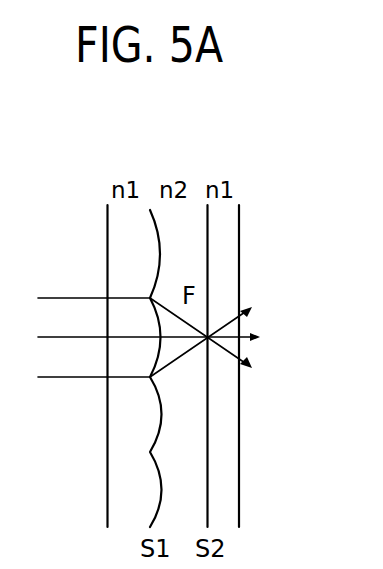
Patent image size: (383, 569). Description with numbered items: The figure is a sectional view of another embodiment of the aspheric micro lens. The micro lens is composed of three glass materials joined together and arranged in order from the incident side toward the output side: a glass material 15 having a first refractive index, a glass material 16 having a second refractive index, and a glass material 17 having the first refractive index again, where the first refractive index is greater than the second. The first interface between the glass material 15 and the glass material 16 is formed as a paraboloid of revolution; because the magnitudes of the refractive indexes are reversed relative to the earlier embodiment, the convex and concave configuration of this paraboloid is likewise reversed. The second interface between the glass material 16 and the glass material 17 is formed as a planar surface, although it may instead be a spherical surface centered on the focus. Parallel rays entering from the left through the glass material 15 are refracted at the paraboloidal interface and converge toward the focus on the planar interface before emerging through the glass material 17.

The glass material 15 is at (128, 253).
The glass material 16 is at (187, 223).
The glass material 17 is at (228, 253).